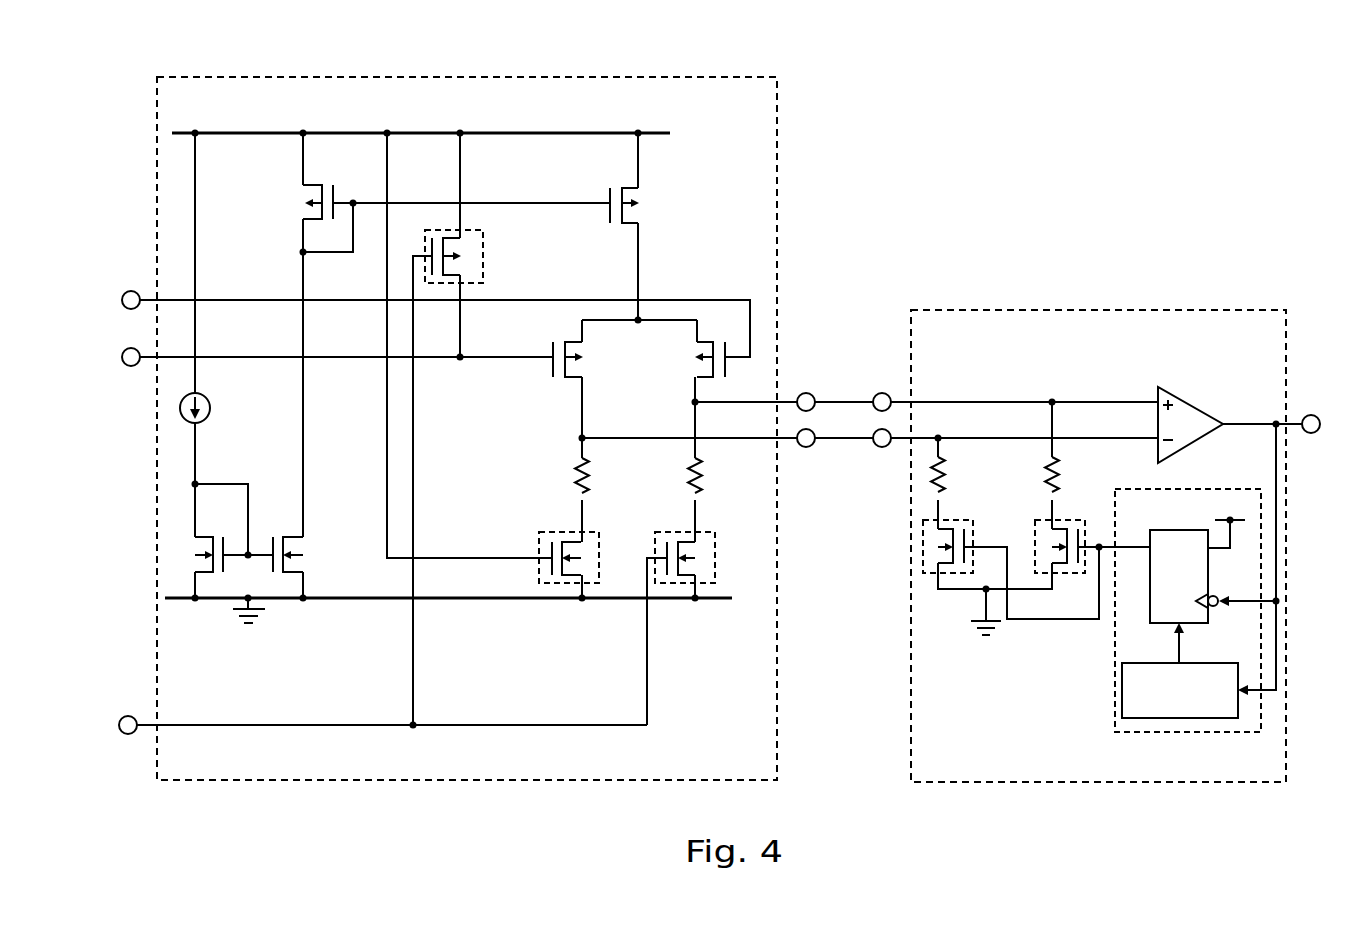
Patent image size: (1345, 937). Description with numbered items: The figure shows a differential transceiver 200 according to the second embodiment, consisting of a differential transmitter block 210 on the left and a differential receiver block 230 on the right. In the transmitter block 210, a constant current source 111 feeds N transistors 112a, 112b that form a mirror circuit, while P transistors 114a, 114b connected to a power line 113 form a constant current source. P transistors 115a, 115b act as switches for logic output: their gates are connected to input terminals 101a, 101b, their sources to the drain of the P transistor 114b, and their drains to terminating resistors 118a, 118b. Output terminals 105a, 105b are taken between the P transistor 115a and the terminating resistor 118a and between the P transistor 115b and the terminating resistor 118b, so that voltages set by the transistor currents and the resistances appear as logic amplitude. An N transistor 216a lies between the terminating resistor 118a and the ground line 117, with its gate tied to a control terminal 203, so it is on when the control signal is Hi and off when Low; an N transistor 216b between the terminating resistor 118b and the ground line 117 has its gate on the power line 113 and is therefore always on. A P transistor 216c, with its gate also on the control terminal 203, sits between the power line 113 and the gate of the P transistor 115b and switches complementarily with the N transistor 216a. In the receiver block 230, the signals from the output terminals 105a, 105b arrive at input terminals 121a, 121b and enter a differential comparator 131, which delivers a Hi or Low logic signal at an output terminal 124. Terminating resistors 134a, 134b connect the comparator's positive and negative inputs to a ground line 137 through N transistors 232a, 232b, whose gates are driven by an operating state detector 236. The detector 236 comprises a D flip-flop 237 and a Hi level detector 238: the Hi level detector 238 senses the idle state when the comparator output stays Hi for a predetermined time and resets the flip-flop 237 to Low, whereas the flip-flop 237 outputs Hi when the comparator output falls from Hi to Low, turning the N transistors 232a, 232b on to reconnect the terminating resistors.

The differential transceiver 200 is at (864, 811).
The differential transmitter block 210 is at (618, 76).
The differential receiver block 230 is at (1208, 310).
The power line 113 is at (497, 132).
The ground line 117 is at (487, 600).
The P transistor 114a is at (324, 186).
The P transistor 114b is at (640, 192).
The P transistor 216c is at (485, 248).
The P transistor 115a is at (696, 370).
The P transistor 115b is at (563, 343).
The N transistor 112a is at (220, 518).
The N transistor 112b is at (305, 538).
The N transistor 216a is at (700, 533).
The N transistor 216b is at (590, 533).
The terminating resistor 118a is at (702, 486).
The terminating resistor 118b is at (590, 486).
The constant current source 111 is at (210, 405).
The input terminal 101a is at (131, 291).
The input terminal 101b is at (131, 366).
The control terminal 203 is at (125, 736).
The output terminal 105a is at (808, 393).
The output terminal 105b is at (806, 447).
The input terminal 121a is at (884, 393).
The input terminal 121b is at (882, 447).
The terminating resistor 134a is at (1058, 486).
The terminating resistor 134b is at (947, 486).
The N transistor 232a is at (1046, 522).
The N transistor 232b is at (975, 531).
The ground line 137 is at (963, 592).
The differential comparator 131 is at (1198, 406).
The output terminal 124 is at (1311, 414).
The operating state detector 236 is at (1195, 488).
The flip-flop circuit 237 is at (1157, 530).
The Hi level detector 238 is at (1210, 664).